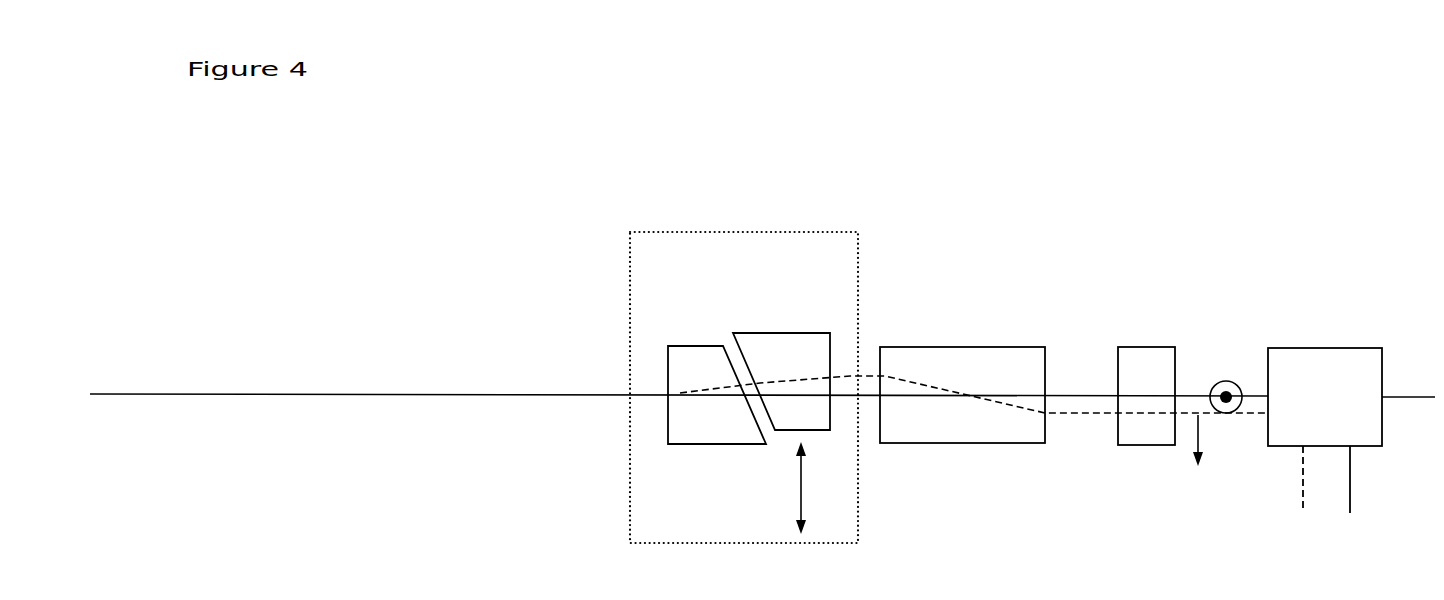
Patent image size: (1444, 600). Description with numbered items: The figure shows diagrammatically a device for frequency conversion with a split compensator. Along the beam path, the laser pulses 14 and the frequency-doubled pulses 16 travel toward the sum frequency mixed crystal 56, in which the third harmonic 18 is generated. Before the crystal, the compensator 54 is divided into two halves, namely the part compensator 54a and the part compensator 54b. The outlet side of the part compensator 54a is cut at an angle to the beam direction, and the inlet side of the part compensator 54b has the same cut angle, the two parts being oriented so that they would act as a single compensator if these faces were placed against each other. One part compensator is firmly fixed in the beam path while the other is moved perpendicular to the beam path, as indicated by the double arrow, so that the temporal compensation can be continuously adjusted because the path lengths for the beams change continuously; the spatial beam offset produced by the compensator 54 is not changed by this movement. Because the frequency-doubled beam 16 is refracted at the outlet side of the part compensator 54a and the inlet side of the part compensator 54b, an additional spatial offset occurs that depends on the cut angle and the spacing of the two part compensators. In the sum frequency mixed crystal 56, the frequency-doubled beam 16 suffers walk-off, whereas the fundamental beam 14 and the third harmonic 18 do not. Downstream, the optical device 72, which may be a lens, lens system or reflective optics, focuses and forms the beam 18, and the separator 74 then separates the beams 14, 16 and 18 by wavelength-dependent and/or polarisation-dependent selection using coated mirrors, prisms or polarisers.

The laser pulses 14 is at (1085, 388).
The frequency-doubled pulses 16 is at (1082, 422).
The third harmonic 18 is at (1408, 378).
The compensator 54 is at (744, 370).
The part compensator 54a is at (710, 368).
The part compensator 54b is at (781, 361).
The sum frequency mixed crystal 56 is at (962, 376).
The optical device 72 is at (1146, 378).
The separator 74 is at (1325, 379).